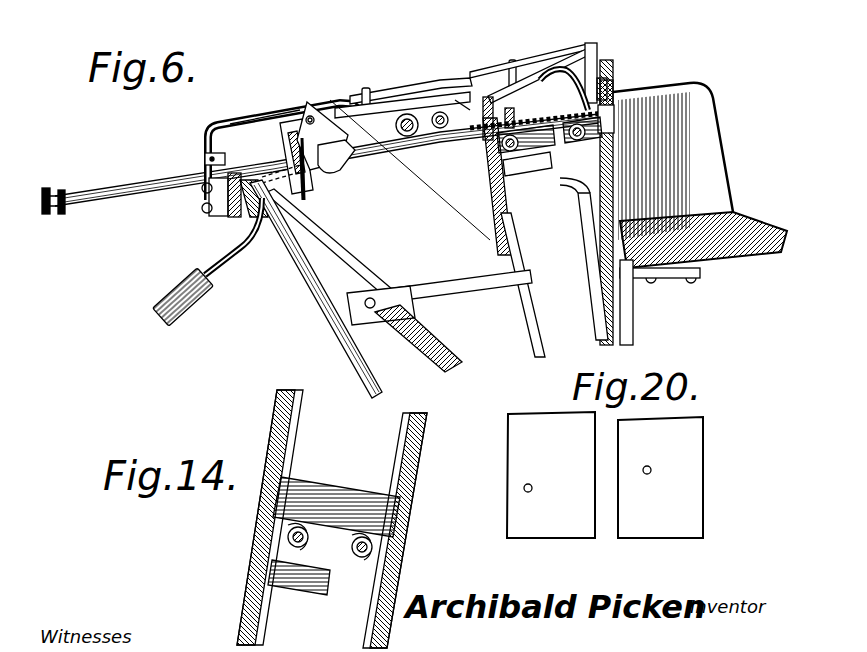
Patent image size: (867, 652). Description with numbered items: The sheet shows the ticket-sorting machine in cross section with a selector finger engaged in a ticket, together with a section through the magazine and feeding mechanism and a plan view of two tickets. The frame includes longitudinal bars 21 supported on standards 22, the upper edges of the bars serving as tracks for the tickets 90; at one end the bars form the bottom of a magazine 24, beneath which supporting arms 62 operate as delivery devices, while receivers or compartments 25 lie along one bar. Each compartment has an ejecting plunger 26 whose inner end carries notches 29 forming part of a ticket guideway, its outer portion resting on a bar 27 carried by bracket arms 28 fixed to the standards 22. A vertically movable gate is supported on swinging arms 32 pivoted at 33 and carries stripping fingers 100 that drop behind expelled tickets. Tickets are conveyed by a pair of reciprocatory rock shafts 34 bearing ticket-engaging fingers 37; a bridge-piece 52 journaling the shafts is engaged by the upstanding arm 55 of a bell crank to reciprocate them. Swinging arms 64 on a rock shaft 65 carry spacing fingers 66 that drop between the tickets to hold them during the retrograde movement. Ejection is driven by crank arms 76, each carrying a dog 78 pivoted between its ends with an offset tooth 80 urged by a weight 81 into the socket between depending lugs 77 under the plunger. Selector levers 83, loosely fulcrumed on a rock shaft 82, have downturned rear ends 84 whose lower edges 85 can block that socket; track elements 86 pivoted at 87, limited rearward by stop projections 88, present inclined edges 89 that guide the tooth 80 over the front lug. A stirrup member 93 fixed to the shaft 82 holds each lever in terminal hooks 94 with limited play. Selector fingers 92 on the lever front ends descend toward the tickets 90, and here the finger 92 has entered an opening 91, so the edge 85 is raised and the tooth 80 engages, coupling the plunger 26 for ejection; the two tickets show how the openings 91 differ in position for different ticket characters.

In FIG. 6, the longitudinal bars 21 is at (486, 185).
In FIG. 14, the longitudinal bars 21 is at (262, 620).
In FIG. 6, the standards 22 is at (603, 310).
In FIG. 14, the magazine 24 is at (332, 521).
In FIG. 6, the receivers or compartments 25 is at (707, 167).
In FIG. 6, the expelling or ejecting plunger 26 is at (123, 195).
In FIG. 6, the bar 27 is at (212, 210).
In FIG. 6, the bracket arms 28 is at (352, 284).
In FIG. 6, the notches 29 is at (462, 145).
In FIG. 6, the swinging arms 32 is at (213, 130).
In FIG. 6, the pivot 33 is at (205, 160).
In FIG. 6, the reciprocatory rock shafts 34 is at (510, 151).
In FIG. 14, the reciprocatory rock shafts 34 is at (288, 537).
In FIG. 6, the ticket-engaging fingers 37 is at (562, 68).
In FIG. 6, the bridge-piece 52 is at (527, 179).
In FIG. 6, the upstanding arm 55 is at (595, 245).
In FIG. 6, the supporting arms 62 is at (543, 137).
In FIG. 14, the supporting arms 62 is at (320, 561).
In FIG. 6, the swinging arms 64 is at (445, 105).
In FIG. 6, the rock shaft 65 is at (405, 137).
In FIG. 6, the spacing fingers 66 is at (487, 97).
In FIG. 6, the crank arms 76 is at (334, 322).
In FIG. 6, the depending lugs 77 is at (296, 178).
In FIG. 6, the dog 78 is at (228, 258).
In FIG. 6, the offset terminal tooth 80 is at (305, 178).
In FIG. 6, the weight 81 is at (180, 286).
In FIG. 6, the rock shaft 82 is at (437, 128).
In FIG. 6, the controlling or selector levers 83 is at (383, 96).
In FIG. 6, the downturned rear ends 84 is at (282, 125).
In FIG. 6, the lower edges 85 is at (283, 160).
In FIG. 6, the track elements 86 is at (315, 127).
In FIG. 6, the pivot 87 is at (318, 114).
In FIG. 6, the stop projections 88 is at (281, 130).
In FIG. 6, the lower inclined edges 89 is at (338, 160).
In FIG. 6, the tickets 90 is at (608, 110).
In FIG. 14, the tickets 90 is at (336, 492).
In FIG. 20, the tickets 90 is at (520, 452).
In FIG. 20, the openings 91 is at (524, 490).
In FIG. 6, the selector fingers 92 is at (550, 76).
In FIG. 6, the stirrup member 93 is at (466, 72).
In FIG. 6, the terminal hooks 94 is at (368, 88).
In FIG. 6, the swinging fingers 100 is at (620, 100).